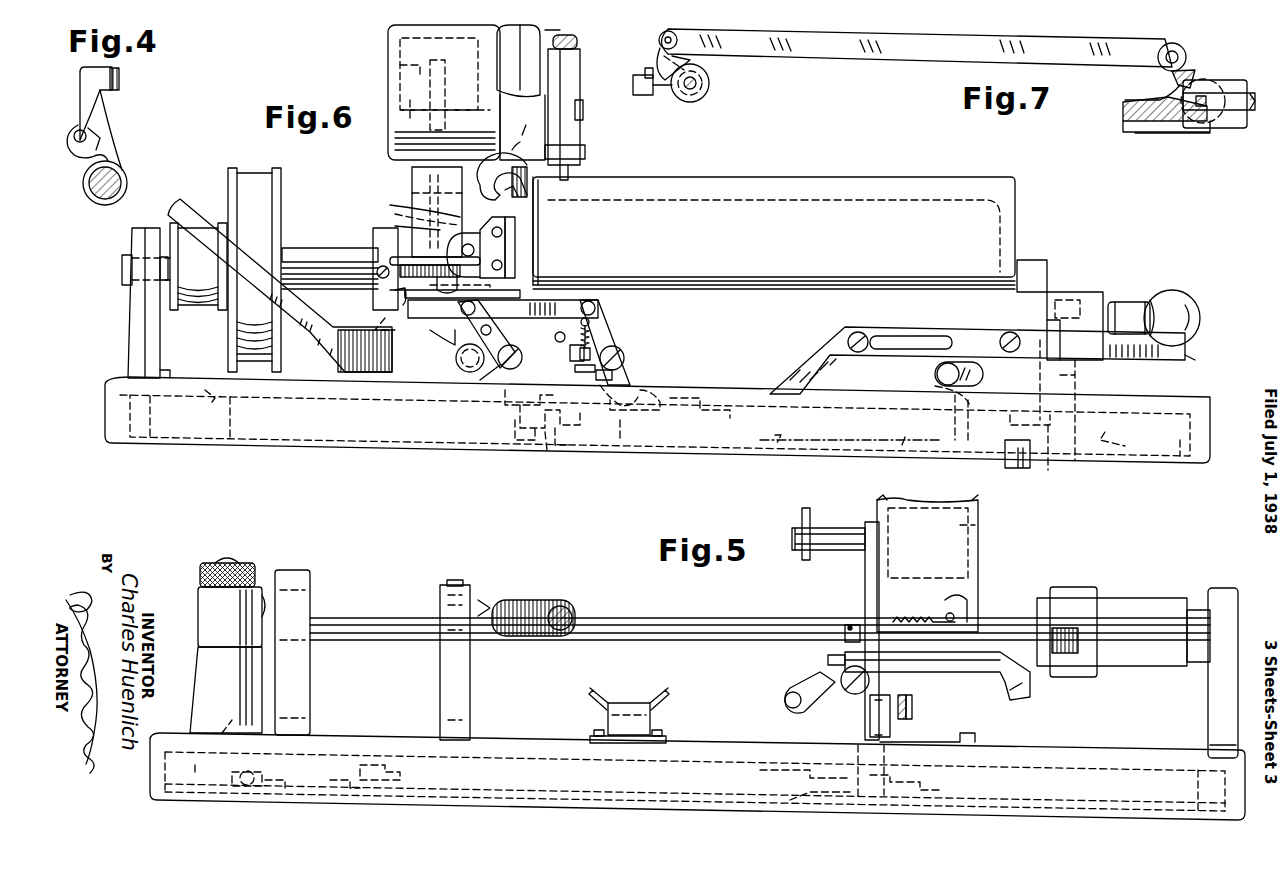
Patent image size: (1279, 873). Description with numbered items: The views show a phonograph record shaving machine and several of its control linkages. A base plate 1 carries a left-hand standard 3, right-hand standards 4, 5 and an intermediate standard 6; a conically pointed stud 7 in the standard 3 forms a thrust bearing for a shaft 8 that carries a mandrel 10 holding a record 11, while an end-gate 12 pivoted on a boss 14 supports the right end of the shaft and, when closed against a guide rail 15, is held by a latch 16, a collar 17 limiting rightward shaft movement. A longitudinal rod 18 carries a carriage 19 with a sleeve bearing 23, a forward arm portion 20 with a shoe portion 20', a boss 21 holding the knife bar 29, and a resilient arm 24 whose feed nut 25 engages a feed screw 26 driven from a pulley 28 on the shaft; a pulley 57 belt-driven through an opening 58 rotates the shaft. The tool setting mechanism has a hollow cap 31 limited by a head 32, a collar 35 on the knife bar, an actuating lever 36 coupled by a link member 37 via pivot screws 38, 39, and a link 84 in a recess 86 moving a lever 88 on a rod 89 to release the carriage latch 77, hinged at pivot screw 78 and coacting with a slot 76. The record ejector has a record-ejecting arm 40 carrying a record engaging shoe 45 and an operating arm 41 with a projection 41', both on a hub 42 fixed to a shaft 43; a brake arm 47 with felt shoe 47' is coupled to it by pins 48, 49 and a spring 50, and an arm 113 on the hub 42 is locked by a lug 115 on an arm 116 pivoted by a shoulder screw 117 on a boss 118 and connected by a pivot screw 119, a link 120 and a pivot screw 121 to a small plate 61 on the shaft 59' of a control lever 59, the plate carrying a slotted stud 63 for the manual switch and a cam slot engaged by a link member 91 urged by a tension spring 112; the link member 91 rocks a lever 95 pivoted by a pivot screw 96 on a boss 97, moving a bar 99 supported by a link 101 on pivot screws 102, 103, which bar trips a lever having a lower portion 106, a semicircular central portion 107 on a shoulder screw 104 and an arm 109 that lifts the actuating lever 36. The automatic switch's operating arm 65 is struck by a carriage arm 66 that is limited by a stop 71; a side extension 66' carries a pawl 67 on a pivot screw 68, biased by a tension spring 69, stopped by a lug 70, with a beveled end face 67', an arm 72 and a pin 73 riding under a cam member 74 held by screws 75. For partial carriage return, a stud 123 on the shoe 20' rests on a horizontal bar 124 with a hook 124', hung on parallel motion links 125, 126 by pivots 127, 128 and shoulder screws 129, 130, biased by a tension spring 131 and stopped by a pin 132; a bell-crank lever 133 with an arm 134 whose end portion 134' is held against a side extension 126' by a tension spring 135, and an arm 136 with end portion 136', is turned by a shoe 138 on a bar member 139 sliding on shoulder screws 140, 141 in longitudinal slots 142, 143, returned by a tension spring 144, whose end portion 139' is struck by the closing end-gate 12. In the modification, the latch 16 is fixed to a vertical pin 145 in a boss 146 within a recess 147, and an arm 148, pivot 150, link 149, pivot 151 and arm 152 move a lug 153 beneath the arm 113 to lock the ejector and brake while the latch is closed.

In FIG. 7, the base plate 1 is at (1132, 135).
In FIG. 6, the base plate 1 is at (1192, 402).
In FIG. 5, the base plate 1 is at (1135, 755).
In FIG. 6, the left-hand standard 3 is at (130, 302).
In FIG. 5, the left-hand standard 3 is at (1222, 588).
In FIG. 5, the right-hand standard 4 is at (300, 665).
In FIG. 5, the right-hand standard 5 is at (440, 660).
In FIG. 6, the intermediate standard 6 is at (393, 226).
In FIG. 6, the conically pointed stud 7 is at (120, 262).
In FIG. 6, the shaft 8 is at (296, 248).
In FIG. 6, the mandrel 10 is at (520, 230).
In FIG. 6, the record 11 is at (690, 177).
In FIG. 5, the end-gate 12 is at (230, 602).
In FIG. 5, the boss 14 is at (226, 690).
In FIG. 7, the guide rail 15 is at (1120, 112).
In FIG. 7, the latch 16 is at (1228, 90).
In FIG. 6, the latch 16 is at (1160, 292).
In FIG. 6, the collar 17 is at (370, 240).
In FIG. 5, the longitudinal rod 18 is at (360, 600).
In FIG. 5, the carriage 19 is at (978, 570).
In FIG. 6, the arm portion 20 is at (427, 92).
In FIG. 6, the shoe portion 20' is at (399, 200).
In FIG. 6, the boss 21 is at (522, 127).
In FIG. 5, the sleeve bearing 23 is at (1145, 598).
In FIG. 5, the resilient arm 24 is at (1075, 622).
In FIG. 5, the feed nut 25 is at (1080, 640).
In FIG. 5, the feed screw 26 is at (535, 600).
In FIG. 6, the pulley 28 is at (198, 312).
In FIG. 6, the knife bar 29 is at (515, 195).
In FIG. 6, the hollow cap 31 is at (562, 32).
In FIG. 6, the head 32 is at (520, 72).
In FIG. 6, the collar 35 is at (540, 185).
In FIG. 6, the actuating lever 36 is at (580, 62).
In FIG. 6, the link member 37 is at (580, 75).
In FIG. 6, the pivot screw 38 is at (583, 150).
In FIG. 6, the pivot screw 39 is at (578, 44).
In FIG. 6, the record-ejecting arm 40 is at (495, 286).
In FIG. 6, the operating arm 41 is at (280, 278).
In FIG. 6, the projection 41' is at (436, 376).
In FIG. 4, the hub 42 is at (127, 190).
In FIG. 4, the shaft 43 is at (124, 172).
In FIG. 6, the shaft 43 is at (478, 382).
In FIG. 6, the record engaging shoe 45 is at (512, 243).
In FIG. 4, the brake arm 47 is at (112, 103).
In FIG. 4, the shoe 47' is at (129, 79).
In FIG. 6, the shoe 47' is at (540, 247).
In FIG. 4, the pin 48 is at (70, 152).
In FIG. 4, the pin 49 is at (86, 133).
In FIG. 4, the spring 50 is at (100, 145).
In FIG. 6, the pulley 57 is at (258, 178).
In FIG. 6, the opening 58 is at (218, 405).
In FIG. 6, the control lever 59 is at (941, 374).
In FIG. 6, the shaft 59' is at (931, 392).
In FIG. 6, the small plate 61 is at (1048, 472).
In FIG. 6, the slotted and pivoted stud 63 is at (1003, 460).
In FIG. 5, the operating arm 65 is at (912, 705).
In FIG. 5, the arm 66 is at (907, 716).
In FIG. 5, the side extension 66' is at (802, 661).
In FIG. 5, the pawl 67 is at (948, 686).
In FIG. 5, the beveled end face 67' is at (1032, 694).
In FIG. 5, the pivot screw 68 is at (840, 682).
In FIG. 5, the tension spring 69 is at (915, 615).
In FIG. 5, the lug 70 is at (835, 632).
In FIG. 5, the stop 71 is at (960, 738).
In FIG. 5, the arm 72 is at (786, 690).
In FIG. 5, the pin 73 is at (790, 708).
In FIG. 5, the cam member 74 is at (632, 703).
In FIG. 5, the screws 75 is at (638, 752).
In FIG. 6, the slot 76 is at (368, 322).
In FIG. 6, the latch 77 is at (393, 214).
In FIG. 6, the pivot screw 78 is at (410, 180).
In FIG. 6, the link 84 is at (398, 50).
In FIG. 6, the recess 86 is at (396, 66).
In FIG. 5, the recess 86 is at (978, 528).
In FIG. 6, the lever 88 is at (430, 85).
In FIG. 6, the rod 89 is at (400, 105).
In FIG. 6, the link member 91 is at (1130, 440).
In FIG. 5, the link member 91 is at (190, 775).
In FIG. 5, the lever 95 is at (288, 788).
In FIG. 5, the pivot screw 96 is at (360, 790).
In FIG. 5, the boss 97 is at (438, 677).
In FIG. 5, the bar 99 is at (505, 790).
In FIG. 5, the link 101 is at (772, 780).
In FIG. 5, the pivot screw 102 is at (785, 800).
In FIG. 5, the pivot screw 103 is at (925, 783).
In FIG. 5, the shoulder screw 104 is at (790, 516).
In FIG. 5, the lower portion 106 is at (876, 798).
In FIG. 5, the central portion 107 is at (865, 580).
In FIG. 6, the arm 109 is at (570, 172).
In FIG. 5, the arm 109 is at (812, 505).
In FIG. 5, the tension spring 112 is at (245, 786).
In FIG. 7, the arm 113 is at (645, 95).
In FIG. 6, the arm 113 is at (522, 357).
In FIG. 6, the lug 115 is at (490, 425).
In FIG. 6, the arm 116 is at (565, 445).
In FIG. 6, the shoulder screw 117 is at (552, 455).
In FIG. 6, the boss 118 is at (565, 412).
In FIG. 6, the pivot screw 119 is at (527, 440).
In FIG. 6, the link 120 is at (622, 445).
In FIG. 6, the pivot screw 121 is at (960, 440).
In FIG. 6, the stud 123 is at (485, 300).
In FIG. 6, the horizontal bar 124 is at (510, 286).
In FIG. 6, the hook 124' is at (374, 301).
In FIG. 6, the link 125 is at (500, 340).
In FIG. 6, the link 126 is at (605, 313).
In FIG. 6, the side extension 126' is at (562, 361).
In FIG. 6, the pivot 127 is at (476, 308).
In FIG. 6, the pivot 128 is at (605, 300).
In FIG. 6, the shoulder screw 129 is at (468, 372).
In FIG. 6, the shoulder screw 130 is at (620, 355).
In FIG. 6, the tension spring 131 is at (375, 335).
In FIG. 6, the pin 132 is at (552, 332).
In FIG. 6, the bell-crank lever 133 is at (624, 362).
In FIG. 6, the arm 134 is at (584, 384).
In FIG. 6, the right-angle end portion 134' is at (572, 369).
In FIG. 6, the tension spring 135 is at (590, 340).
In FIG. 6, the arm 136 is at (635, 385).
In FIG. 6, the right-angle end portion 136' is at (659, 387).
In FIG. 6, the shoe 138 is at (695, 398).
In FIG. 6, the bar member 139 is at (977, 360).
In FIG. 6, the right-angle end portion 139' is at (1208, 358).
In FIG. 6, the shoulder screw 140 is at (866, 335).
In FIG. 6, the shoulder screw 141 is at (1005, 330).
In FIG. 6, the longitudinal slot 142 is at (918, 336).
In FIG. 6, the longitudinal slot 143 is at (1047, 300).
In FIG. 6, the tension spring 144 is at (780, 450).
In FIG. 7, the vertical pin 145 is at (1208, 108).
In FIG. 6, the vertical pin 145 is at (1090, 380).
In FIG. 7, the boss 146 is at (1225, 82).
In FIG. 6, the boss 146 is at (1038, 375).
In FIG. 7, the recess 147 is at (1165, 110).
In FIG. 7, the arm 148 is at (1192, 72).
In FIG. 6, the arm 148 is at (1020, 415).
In FIG. 7, the link 149 is at (862, 60).
In FIG. 7, the pivot 150 is at (1158, 52).
In FIG. 7, the pivot 151 is at (659, 40).
In FIG. 7, the arm 152 is at (695, 62).
In FIG. 7, the lug 153 is at (680, 95).